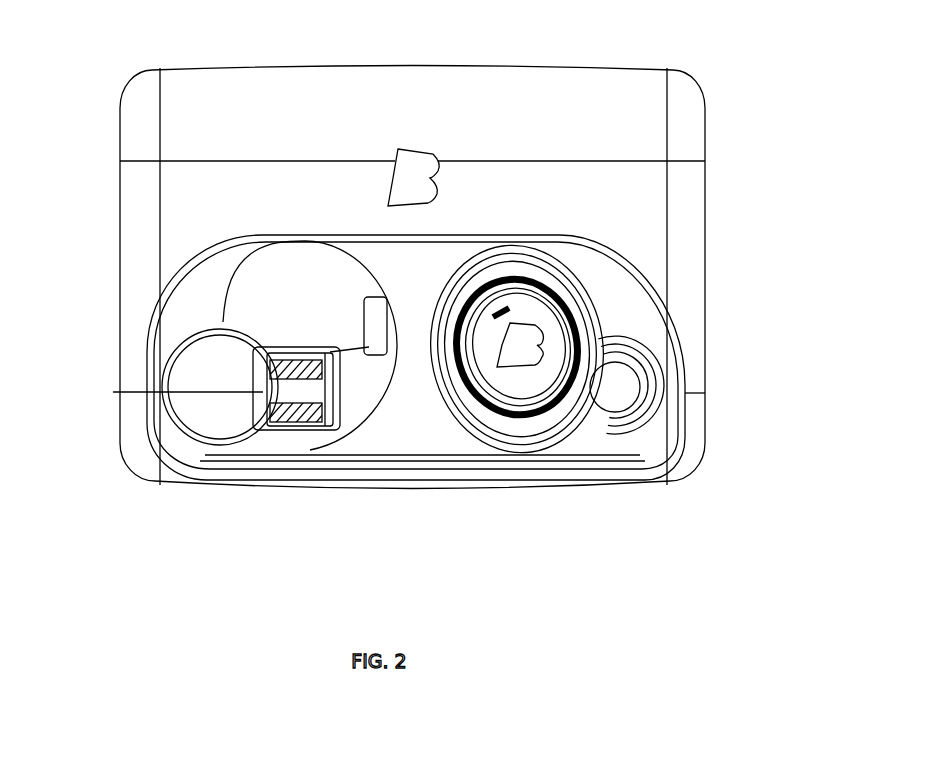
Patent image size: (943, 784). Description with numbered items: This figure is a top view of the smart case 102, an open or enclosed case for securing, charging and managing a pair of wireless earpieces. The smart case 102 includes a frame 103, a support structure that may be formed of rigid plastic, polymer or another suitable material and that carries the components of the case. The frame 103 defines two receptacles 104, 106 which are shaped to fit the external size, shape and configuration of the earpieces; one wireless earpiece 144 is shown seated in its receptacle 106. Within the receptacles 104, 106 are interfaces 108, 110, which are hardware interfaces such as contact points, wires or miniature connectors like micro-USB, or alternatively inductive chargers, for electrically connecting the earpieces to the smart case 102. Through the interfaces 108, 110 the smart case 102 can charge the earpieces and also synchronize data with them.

The smart case 102 is at (705, 110).
The frame 103 is at (612, 71).
The receptacle 104 is at (192, 287).
The receptacle 106 is at (638, 285).
The interface 108 is at (297, 430).
The interface 110 is at (603, 418).
The wireless earpiece 144 is at (485, 427).